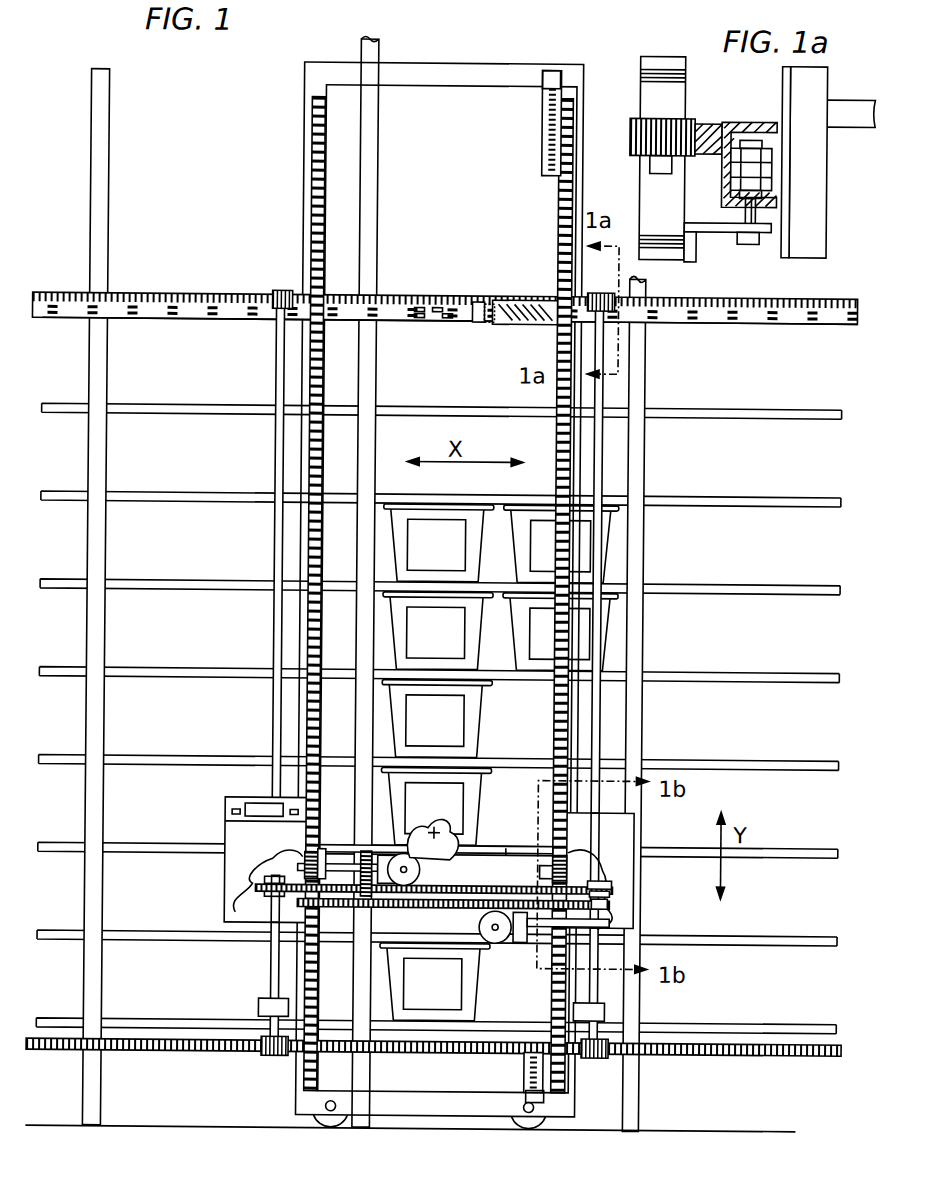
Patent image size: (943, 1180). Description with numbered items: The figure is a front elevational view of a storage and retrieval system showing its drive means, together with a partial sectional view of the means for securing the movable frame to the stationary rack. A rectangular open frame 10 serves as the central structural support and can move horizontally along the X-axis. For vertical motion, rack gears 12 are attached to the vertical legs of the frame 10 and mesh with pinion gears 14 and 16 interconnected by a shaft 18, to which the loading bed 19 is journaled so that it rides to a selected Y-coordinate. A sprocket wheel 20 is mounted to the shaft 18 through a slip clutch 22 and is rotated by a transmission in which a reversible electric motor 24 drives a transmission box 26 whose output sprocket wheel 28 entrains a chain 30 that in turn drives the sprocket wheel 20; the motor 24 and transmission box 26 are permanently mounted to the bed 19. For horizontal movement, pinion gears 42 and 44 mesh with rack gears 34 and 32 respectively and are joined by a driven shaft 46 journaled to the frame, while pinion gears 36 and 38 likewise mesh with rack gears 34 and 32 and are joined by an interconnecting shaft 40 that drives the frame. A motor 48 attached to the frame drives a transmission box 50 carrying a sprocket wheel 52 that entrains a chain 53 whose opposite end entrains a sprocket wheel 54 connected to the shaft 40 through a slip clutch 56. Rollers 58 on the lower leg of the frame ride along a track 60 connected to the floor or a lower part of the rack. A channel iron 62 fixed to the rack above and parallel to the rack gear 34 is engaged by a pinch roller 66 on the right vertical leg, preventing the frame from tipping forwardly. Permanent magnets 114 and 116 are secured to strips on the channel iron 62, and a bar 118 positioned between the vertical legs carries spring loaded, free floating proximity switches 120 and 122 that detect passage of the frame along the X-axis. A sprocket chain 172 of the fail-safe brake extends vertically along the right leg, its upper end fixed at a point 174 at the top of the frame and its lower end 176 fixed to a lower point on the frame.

In FIG. 1, the rectangular open frame 10 is at (432, 62).
In FIG. 1, the rack gears 12 is at (318, 631).
In FIG. 1, the pinion gear 14 is at (572, 862).
In FIG. 1, the pinion gear 16 is at (300, 845).
In FIG. 1, the shaft 18 is at (502, 868).
In FIG. 1, the loading bed 19 is at (508, 848).
In FIG. 1, the sprocket wheel 20 is at (318, 853).
In FIG. 1, the slip clutch 22 is at (372, 855).
In FIG. 1, the electric motor 24 is at (425, 836).
In FIG. 1, the transmission box 26 is at (400, 855).
In FIG. 1, the sprocket wheel 28 is at (328, 852).
In FIG. 1, the chain 30 is at (360, 882).
In FIG. 1, the rack gear 32 is at (160, 1055).
In FIG. 1, the rack gear 34 is at (179, 295).
In FIG. 1a, the rack gear 34 is at (702, 122).
In FIG. 1, the pinion gear 36 is at (597, 296).
In FIG. 1, the pinion gear 38 is at (600, 1058).
In FIG. 1, the interconnecting shaft 40 is at (599, 462).
In FIG. 1, the pinion gear 42 is at (275, 300).
In FIG. 1a, the pinion gear 42 is at (636, 132).
In FIG. 1, the pinion gear 44 is at (272, 1055).
In FIG. 1, the shaft 46 is at (271, 547).
In FIG. 1, the motor 48 is at (498, 945).
In FIG. 1, the transmission box 50 is at (522, 945).
In FIG. 1, the sprocket wheel 52 is at (520, 892).
In FIG. 1, the chain 53 is at (472, 893).
In FIG. 1, the sprocket wheel 54 is at (612, 893).
In FIG. 1, the slip clutch 56 is at (612, 910).
In FIG. 1, the rollers 58 is at (335, 1122).
In FIG. 1, the track 60 is at (735, 1130).
In FIG. 1, the channel iron 62 is at (153, 325).
In FIG. 1a, the channel iron 62 is at (711, 220).
In FIG. 1a, the pinch roller 66 is at (754, 170).
In FIG. 1, the permanent magnets 114 is at (432, 300).
In FIG. 1, the permanent magnets 116 is at (427, 320).
In FIG. 1, the bar 118 is at (517, 302).
In FIG. 1, the proximity switch 120 is at (474, 300).
In FIG. 1, the proximity switch 122 is at (470, 322).
In FIG. 1, the sprocket chain 172 is at (536, 121).
In FIG. 1, the upper chain fixing point 174 is at (543, 70).
In FIG. 1, the lower end of chain 176 is at (548, 1098).